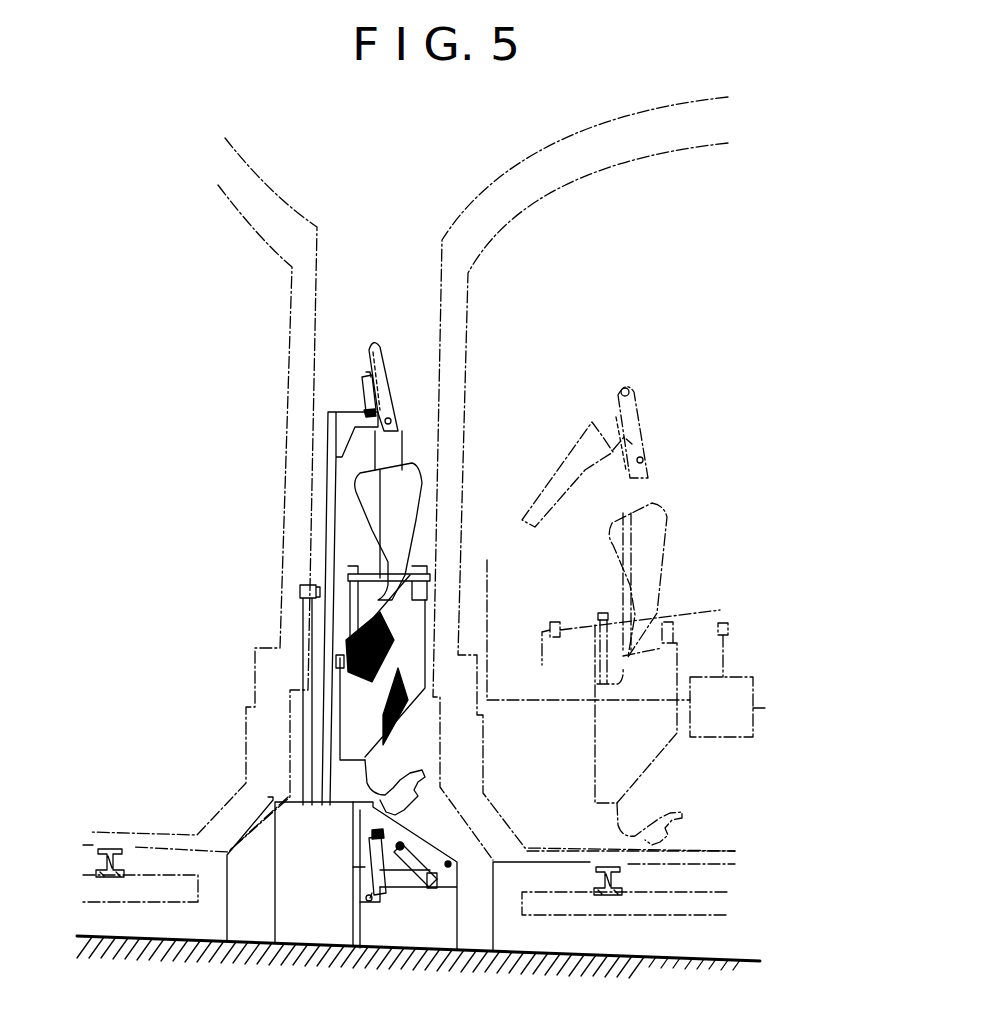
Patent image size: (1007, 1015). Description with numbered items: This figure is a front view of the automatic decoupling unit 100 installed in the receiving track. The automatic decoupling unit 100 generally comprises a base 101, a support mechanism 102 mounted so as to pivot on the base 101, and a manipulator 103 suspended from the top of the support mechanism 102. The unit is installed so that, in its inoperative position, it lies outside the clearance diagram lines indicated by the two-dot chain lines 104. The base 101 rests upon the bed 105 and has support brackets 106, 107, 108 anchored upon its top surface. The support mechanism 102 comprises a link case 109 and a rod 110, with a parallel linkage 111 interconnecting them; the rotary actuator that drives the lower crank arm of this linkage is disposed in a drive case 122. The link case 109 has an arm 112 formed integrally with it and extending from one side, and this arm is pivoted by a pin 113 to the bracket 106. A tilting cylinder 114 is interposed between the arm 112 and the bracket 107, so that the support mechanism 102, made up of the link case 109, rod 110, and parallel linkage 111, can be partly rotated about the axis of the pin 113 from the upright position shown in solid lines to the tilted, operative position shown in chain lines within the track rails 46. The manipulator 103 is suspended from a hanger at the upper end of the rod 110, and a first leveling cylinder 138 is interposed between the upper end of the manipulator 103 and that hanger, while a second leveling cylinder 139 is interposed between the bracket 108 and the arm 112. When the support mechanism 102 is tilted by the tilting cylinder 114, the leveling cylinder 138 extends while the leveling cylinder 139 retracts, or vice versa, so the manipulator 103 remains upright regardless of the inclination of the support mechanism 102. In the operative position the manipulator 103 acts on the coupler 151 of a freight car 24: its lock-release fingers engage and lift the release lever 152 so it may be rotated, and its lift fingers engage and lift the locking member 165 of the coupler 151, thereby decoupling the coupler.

The two-dot chain lines 104 is at (287, 196).
The automatic decoupling unit 100 is at (358, 375).
The leveling cylinder 138 is at (365, 400).
The manipulator 103 is at (410, 457).
The rod 110 is at (330, 502).
The parallel linkage 111 is at (318, 598).
The support mechanism 102 is at (305, 733).
The arm 112 is at (402, 833).
The leveling cylinder 139 is at (422, 856).
The pin 113 is at (450, 862).
The tilting cylinder 114 is at (363, 857).
The support bracket 107 is at (370, 903).
The support bracket 108 is at (428, 888).
The support bracket 106 is at (453, 878).
The base 101 is at (472, 942).
The link case 109 is at (282, 925).
The drive case 122 is at (230, 910).
The track rails 46 is at (122, 867).
The bed 105 is at (577, 958).
The release lever 152 is at (568, 627).
The freight car 24 is at (558, 702).
The locking member 165 is at (723, 672).
The coupler 151 is at (733, 730).